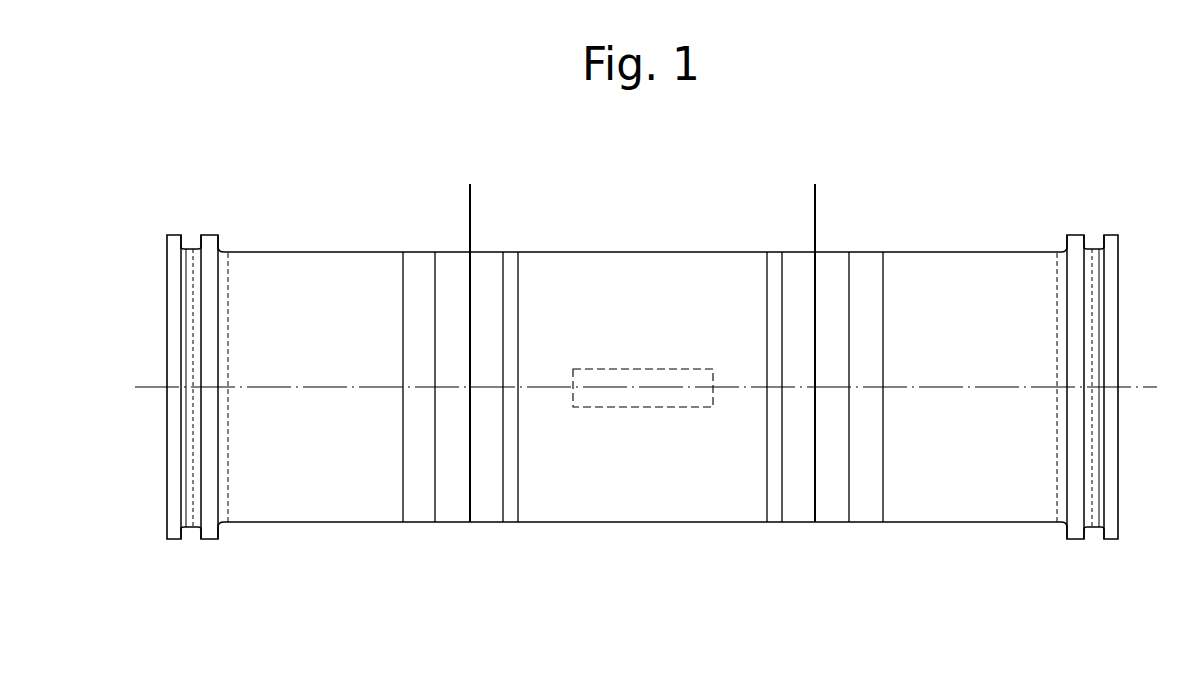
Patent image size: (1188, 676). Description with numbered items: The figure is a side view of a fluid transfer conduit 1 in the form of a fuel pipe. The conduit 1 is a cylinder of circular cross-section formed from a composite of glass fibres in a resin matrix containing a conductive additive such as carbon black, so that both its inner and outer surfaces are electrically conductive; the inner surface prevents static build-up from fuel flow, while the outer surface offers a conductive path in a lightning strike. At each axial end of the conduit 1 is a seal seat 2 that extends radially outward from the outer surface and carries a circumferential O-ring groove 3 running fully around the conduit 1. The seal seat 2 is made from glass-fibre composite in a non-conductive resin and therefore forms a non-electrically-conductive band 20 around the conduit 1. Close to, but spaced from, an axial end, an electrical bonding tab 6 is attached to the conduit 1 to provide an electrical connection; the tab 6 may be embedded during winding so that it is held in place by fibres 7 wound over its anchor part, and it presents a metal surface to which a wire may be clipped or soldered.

The fluid transfer conduit 1 is at (1025, 188).
The seal seat 2 is at (167, 500).
The O-ring groove 3 is at (191, 529).
The non-electrically-conductive band 20 is at (211, 538).
The electrical bonding tab 6 is at (472, 197).
The fibres 7 is at (440, 261).